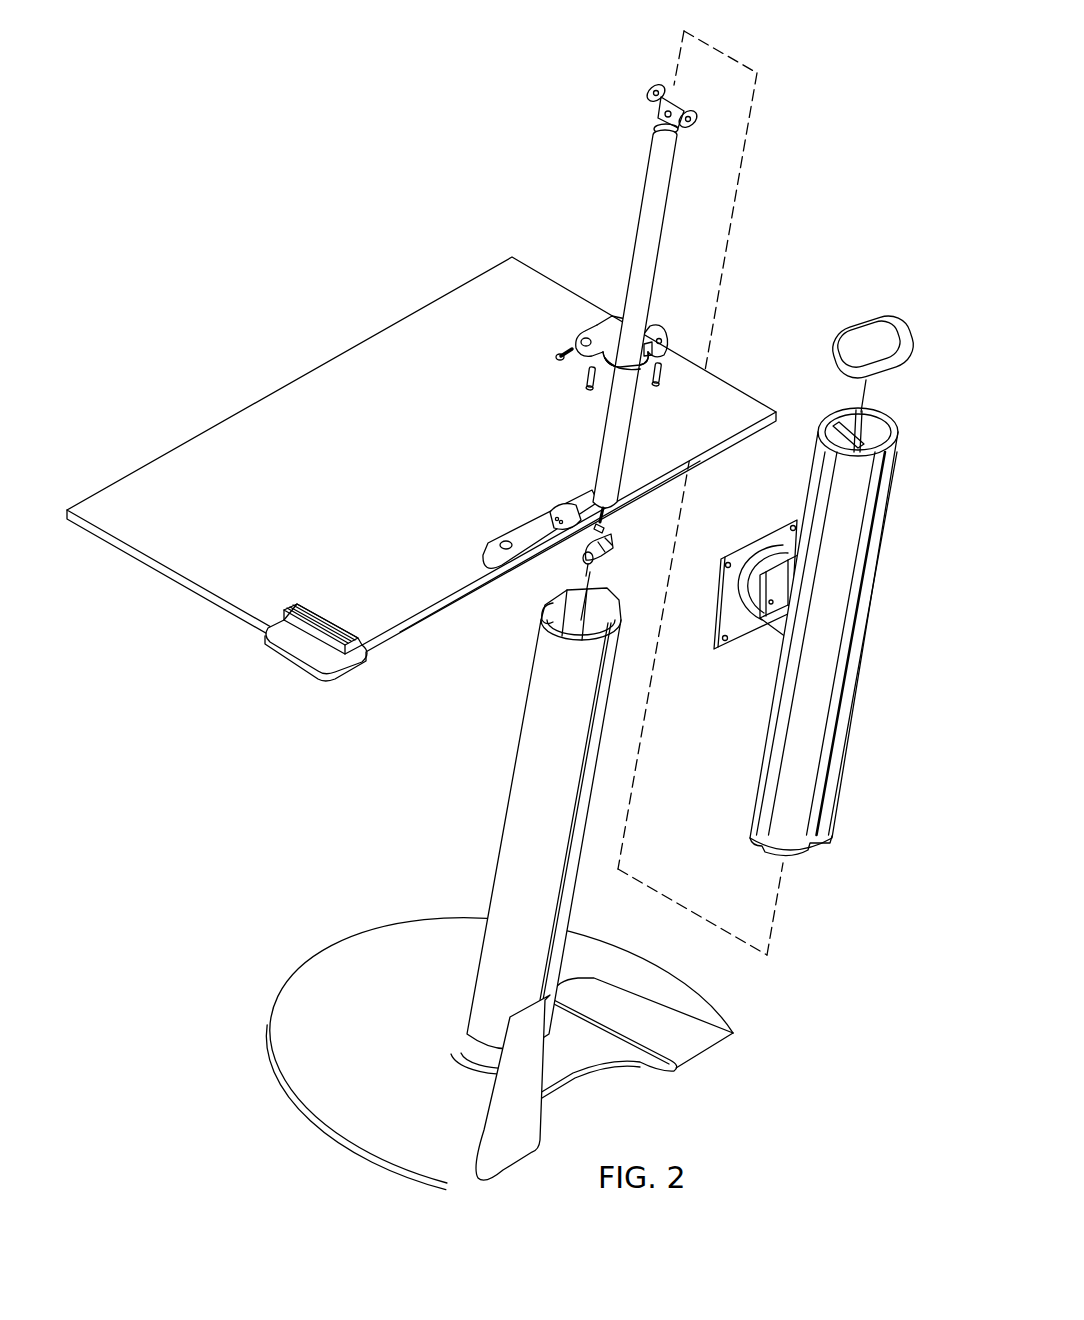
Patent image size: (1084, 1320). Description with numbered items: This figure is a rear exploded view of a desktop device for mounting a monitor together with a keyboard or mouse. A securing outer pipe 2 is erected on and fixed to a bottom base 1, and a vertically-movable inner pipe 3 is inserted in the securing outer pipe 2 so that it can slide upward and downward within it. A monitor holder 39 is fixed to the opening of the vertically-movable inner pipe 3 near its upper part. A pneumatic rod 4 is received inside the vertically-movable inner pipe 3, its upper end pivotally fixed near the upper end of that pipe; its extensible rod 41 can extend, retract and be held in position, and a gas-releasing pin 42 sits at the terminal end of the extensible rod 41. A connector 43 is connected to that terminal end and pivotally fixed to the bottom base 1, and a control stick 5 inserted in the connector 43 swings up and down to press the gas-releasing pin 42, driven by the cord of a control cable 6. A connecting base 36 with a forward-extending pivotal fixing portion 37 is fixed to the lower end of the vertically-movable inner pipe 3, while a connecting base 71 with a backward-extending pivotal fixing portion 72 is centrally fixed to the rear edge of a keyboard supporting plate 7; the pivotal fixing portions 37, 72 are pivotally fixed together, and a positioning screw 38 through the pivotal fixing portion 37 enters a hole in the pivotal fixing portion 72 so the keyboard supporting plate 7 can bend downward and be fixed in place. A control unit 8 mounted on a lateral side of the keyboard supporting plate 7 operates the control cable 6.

The bottom base 1 is at (382, 988).
The securing outer pipe 2 is at (532, 780).
The vertically-movable inner pipe 3 is at (828, 753).
The pneumatic rod 4 is at (648, 197).
The control stick 5 is at (608, 565).
The control cable 6 is at (472, 595).
The keyboard supporting plate 7 is at (447, 320).
The control unit 8 is at (294, 648).
The connecting base 36 is at (662, 325).
The pivotal fixing portion 37 is at (580, 328).
The positioning screw 38 is at (563, 348).
The monitor holder 39 is at (782, 532).
The extensible rod 41 is at (607, 512).
The gas-releasing pin 42 is at (603, 520).
The connector 43 is at (585, 558).
The connecting base 71 is at (517, 532).
The pivotal fixing portion 72 is at (540, 510).